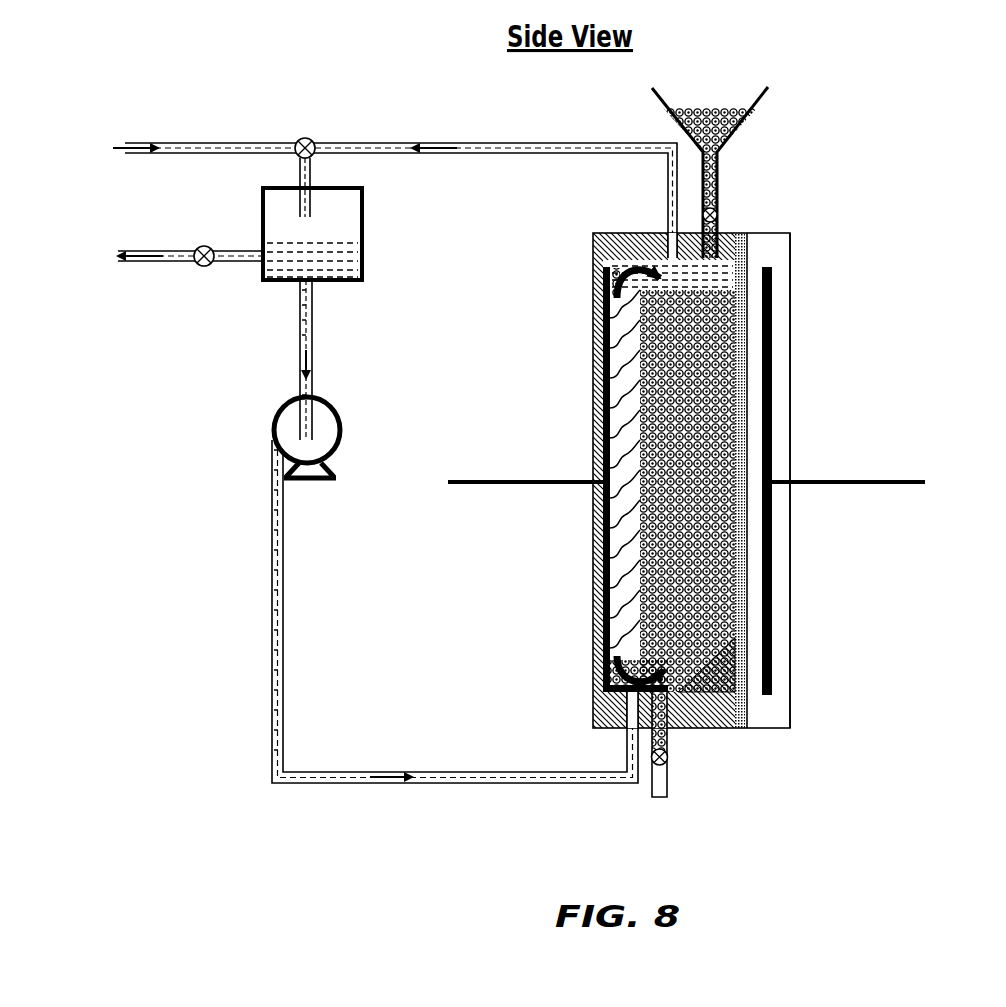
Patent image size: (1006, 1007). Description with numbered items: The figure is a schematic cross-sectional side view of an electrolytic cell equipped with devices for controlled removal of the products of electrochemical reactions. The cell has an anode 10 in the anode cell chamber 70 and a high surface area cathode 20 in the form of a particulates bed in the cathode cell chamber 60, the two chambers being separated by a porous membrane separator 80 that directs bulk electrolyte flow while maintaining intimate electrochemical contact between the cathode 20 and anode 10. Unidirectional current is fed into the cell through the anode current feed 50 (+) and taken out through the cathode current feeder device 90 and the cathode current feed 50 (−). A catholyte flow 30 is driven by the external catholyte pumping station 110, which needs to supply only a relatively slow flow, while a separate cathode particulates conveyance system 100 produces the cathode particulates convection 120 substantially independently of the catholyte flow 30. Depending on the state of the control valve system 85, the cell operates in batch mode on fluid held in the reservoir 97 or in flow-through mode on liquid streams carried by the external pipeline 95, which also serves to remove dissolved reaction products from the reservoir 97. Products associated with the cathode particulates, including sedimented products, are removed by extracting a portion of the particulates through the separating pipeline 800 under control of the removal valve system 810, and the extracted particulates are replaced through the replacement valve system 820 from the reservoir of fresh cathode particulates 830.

The anode 10 is at (772, 338).
The cathode 20 is at (650, 350).
The catholyte flow 30 is at (393, 768).
The current feed 50 is at (485, 468).
The cathode cell chamber 60 is at (595, 713).
The anode cell chamber 70 is at (790, 707).
The separator 80 is at (740, 728).
The control valve system 85 is at (305, 136).
The cathode current feeder device 90 is at (603, 612).
The external pipeline 95 is at (170, 165).
The reservoir 97 is at (363, 243).
The cathode particulates conveyance system 100 is at (633, 554).
The catholyte pumping station 110 is at (275, 420).
The cathode particulates convection 120 is at (630, 256).
The separating pipeline 800 is at (659, 802).
The removal valve system 810 is at (674, 762).
The replacement valve system 820 is at (726, 215).
The reservoir of fresh cathode particulates 830 is at (745, 132).